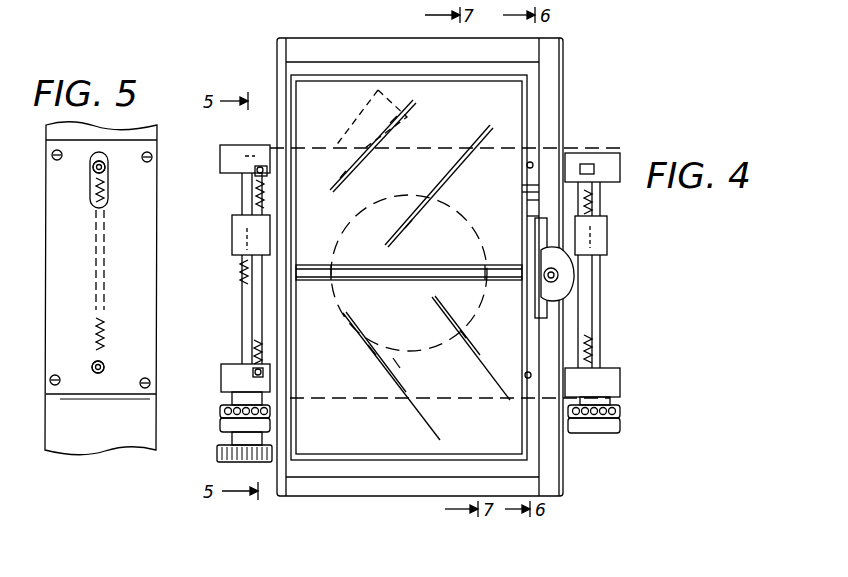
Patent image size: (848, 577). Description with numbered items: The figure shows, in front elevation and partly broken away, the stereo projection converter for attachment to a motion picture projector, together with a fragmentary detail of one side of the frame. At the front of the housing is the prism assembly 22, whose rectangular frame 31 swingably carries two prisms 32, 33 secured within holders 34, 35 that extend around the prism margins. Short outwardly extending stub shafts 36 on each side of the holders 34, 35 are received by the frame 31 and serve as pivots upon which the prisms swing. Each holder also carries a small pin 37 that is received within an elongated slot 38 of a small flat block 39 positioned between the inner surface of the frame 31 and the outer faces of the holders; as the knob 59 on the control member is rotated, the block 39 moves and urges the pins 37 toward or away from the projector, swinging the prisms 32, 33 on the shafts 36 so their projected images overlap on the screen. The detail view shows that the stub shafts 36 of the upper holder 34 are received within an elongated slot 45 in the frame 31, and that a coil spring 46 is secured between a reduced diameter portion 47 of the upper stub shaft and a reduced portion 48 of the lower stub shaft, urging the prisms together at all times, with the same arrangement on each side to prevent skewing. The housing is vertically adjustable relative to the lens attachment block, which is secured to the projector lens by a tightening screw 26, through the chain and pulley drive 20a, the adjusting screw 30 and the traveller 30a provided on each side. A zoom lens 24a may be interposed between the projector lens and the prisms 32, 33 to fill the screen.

In FIG. 4, the chain and pulley drive 20a is at (212, 456).
In FIG. 4, the prism assembly 22 is at (533, 103).
In FIG. 4, the zoom lens 24a is at (500, 175).
In FIG. 4, the tightening screw 26 is at (365, 97).
In FIG. 4, the adjusting screw 30 is at (603, 212).
In FIG. 4, the traveller 30a is at (609, 230).
In FIG. 4, the rectangular frame 31 is at (392, 40).
In FIG. 4, the prism 32 is at (481, 120).
In FIG. 4, the prism 33 is at (411, 329).
In FIG. 4, the prism holder 34 is at (530, 122).
In FIG. 4, the prism holder 35 is at (416, 478).
In FIG. 5, the stub shaft 36 is at (93, 168).
In FIG. 4, the stub shaft 36 is at (264, 150).
In FIG. 4, the pin 37 is at (536, 236).
In FIG. 4, the elongated slot 38 is at (534, 195).
In FIG. 4, the flat block 39 is at (534, 217).
In FIG. 5, the elongated slot 45 is at (92, 200).
In FIG. 5, the coil spring 46 is at (108, 240).
In FIG. 4, the coil spring 46 is at (240, 204).
In FIG. 5, the reduced diameter portion 47 is at (106, 175).
In FIG. 4, the reduced diameter portion 47 is at (226, 172).
In FIG. 5, the reduced portion 48 is at (105, 363).
In FIG. 4, the reduced portion 48 is at (250, 373).
In FIG. 4, the knob 59 is at (576, 282).